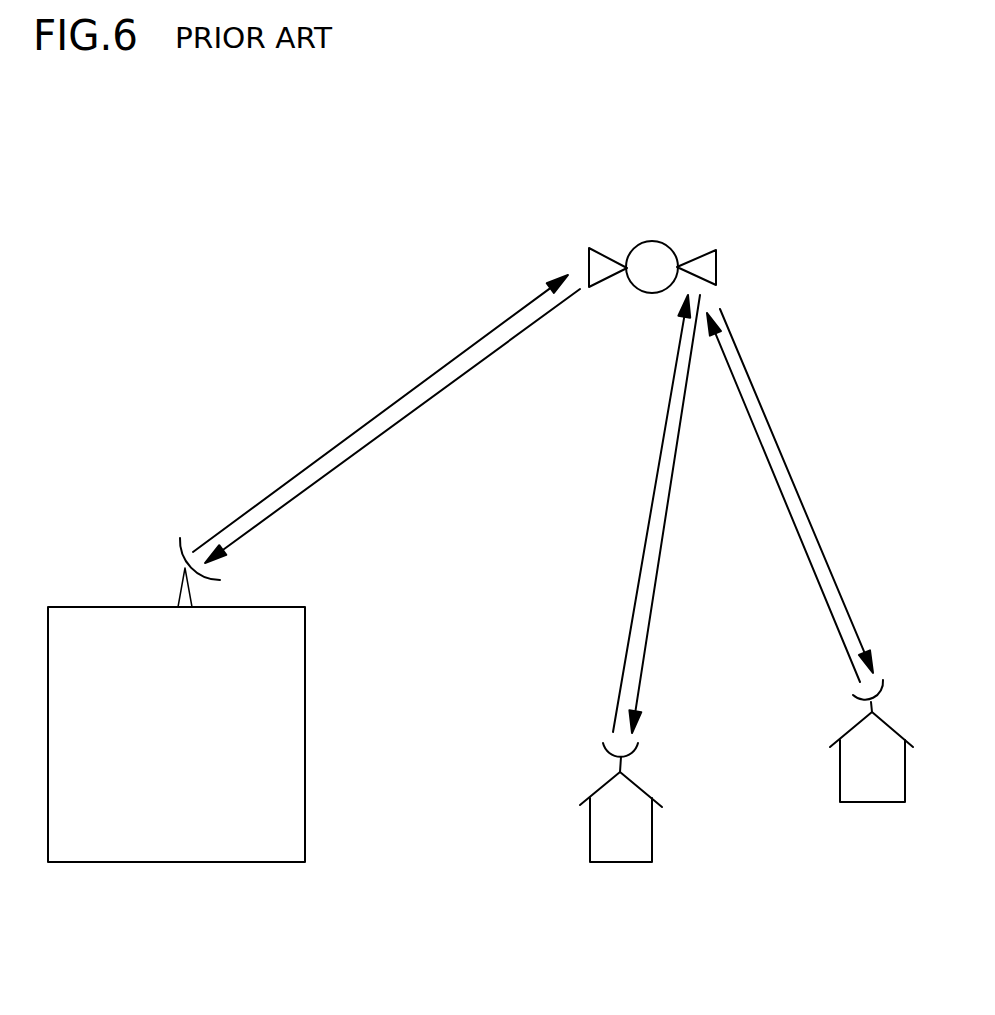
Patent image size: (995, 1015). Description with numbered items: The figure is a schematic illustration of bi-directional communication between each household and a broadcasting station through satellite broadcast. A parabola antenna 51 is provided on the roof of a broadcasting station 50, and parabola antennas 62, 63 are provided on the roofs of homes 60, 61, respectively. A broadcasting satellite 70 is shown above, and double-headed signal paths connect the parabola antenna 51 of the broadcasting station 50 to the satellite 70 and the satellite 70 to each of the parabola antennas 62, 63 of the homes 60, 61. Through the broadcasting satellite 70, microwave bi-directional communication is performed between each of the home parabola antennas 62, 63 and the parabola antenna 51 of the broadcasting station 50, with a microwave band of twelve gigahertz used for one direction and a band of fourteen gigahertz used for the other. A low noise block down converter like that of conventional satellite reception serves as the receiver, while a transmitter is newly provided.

The broadcasting station 50 is at (293, 667).
The parabola antenna 51 is at (180, 565).
The home 60 is at (643, 787).
The home 61 is at (850, 768).
The parabola antenna 62 is at (635, 752).
The parabola antenna 63 is at (850, 698).
The broadcasting satellite 70 is at (690, 243).